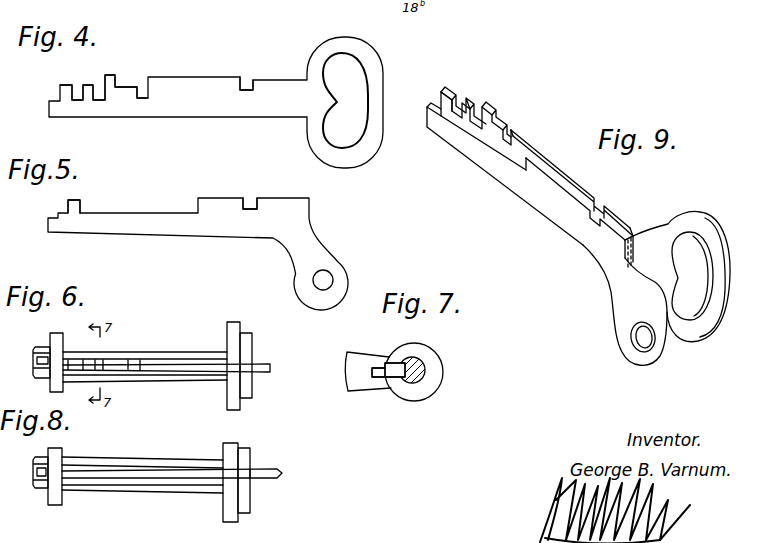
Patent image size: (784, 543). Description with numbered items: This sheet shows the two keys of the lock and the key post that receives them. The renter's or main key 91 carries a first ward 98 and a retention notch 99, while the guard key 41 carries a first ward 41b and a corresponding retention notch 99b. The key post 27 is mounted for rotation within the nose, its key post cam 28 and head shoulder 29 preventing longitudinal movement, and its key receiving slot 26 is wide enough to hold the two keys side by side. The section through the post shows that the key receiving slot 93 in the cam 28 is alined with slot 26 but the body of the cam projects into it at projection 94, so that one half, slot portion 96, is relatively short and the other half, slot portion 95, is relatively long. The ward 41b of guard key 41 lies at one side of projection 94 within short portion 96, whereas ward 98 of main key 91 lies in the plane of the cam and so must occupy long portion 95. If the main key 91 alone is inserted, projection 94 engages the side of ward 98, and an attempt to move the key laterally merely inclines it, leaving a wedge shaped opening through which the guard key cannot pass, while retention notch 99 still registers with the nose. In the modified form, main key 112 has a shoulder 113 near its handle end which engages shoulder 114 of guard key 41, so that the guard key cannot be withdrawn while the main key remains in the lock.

In FIG. 4, the main key 91 is at (183, 77).
In FIG. 8, the main key 91 is at (268, 466).
In FIG. 4, the first ward of main key 98 is at (62, 85).
In FIG. 9, the first ward of main key 98 is at (446, 91).
In FIG. 4, the retention notch 99 is at (252, 78).
In FIG. 5, the guard key 41 is at (158, 216).
In FIG. 6, the guard key 41 is at (182, 372).
In FIG. 9, the guard key 41 is at (538, 193).
In FIG. 5, the first ward of guard key 41b is at (81, 203).
In FIG. 6, the first ward of guard key 41b is at (80, 356).
In FIG. 9, the first ward of guard key 41b is at (456, 119).
In FIG. 5, the retention notch of guard key 99b is at (250, 200).
In FIG. 6, the key post 27 is at (147, 381).
In FIG. 8, the key post 27 is at (147, 457).
In FIG. 7, the key post 27 is at (424, 368).
In FIG. 6, the key post cam 28 is at (57, 375).
In FIG. 8, the key post cam 28 is at (55, 485).
In FIG. 7, the key post cam 28 is at (347, 378).
In FIG. 6, the head shoulder 29 is at (232, 388).
In FIG. 8, the head shoulder 29 is at (233, 503).
In FIG. 8, the key receiving slot 26 is at (244, 482).
In FIG. 7, the key receiving slot 26 is at (424, 378).
In FIG. 7, the key receiving slot in cam 93 is at (393, 374).
In FIG. 7, the projection 94 is at (384, 353).
In FIG. 7, the long slot portion 95 is at (381, 374).
In FIG. 7, the short slot portion 96 is at (406, 363).
In FIG. 9, the modified main key 112 is at (528, 135).
In FIG. 9, the shoulder of main key 113 is at (624, 237).
In FIG. 9, the shoulder of guard key 114 is at (618, 266).